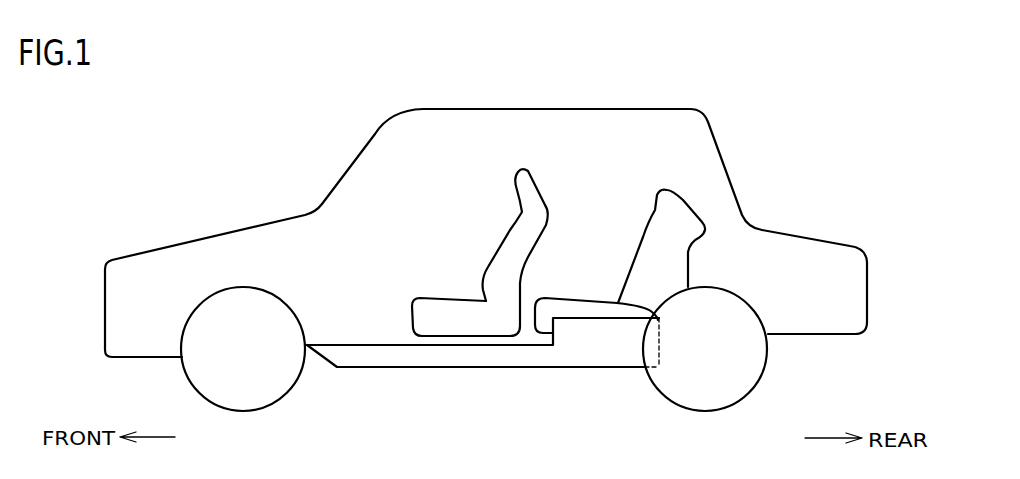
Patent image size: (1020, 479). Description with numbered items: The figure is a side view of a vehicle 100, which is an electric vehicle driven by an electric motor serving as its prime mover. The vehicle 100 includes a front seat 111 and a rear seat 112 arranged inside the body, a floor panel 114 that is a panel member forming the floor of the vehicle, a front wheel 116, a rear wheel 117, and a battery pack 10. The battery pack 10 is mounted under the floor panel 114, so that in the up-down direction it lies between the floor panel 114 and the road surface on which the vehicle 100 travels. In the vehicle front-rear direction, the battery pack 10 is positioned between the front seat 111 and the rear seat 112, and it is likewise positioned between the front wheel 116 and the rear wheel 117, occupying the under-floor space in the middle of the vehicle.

The vehicle 100 is at (781, 121).
The battery pack 10 is at (381, 400).
The front seat 111 is at (530, 172).
The rear seat 112 is at (668, 190).
The floor panel 114 is at (447, 345).
The front wheel 116 is at (243, 383).
The rear wheel 117 is at (703, 385).